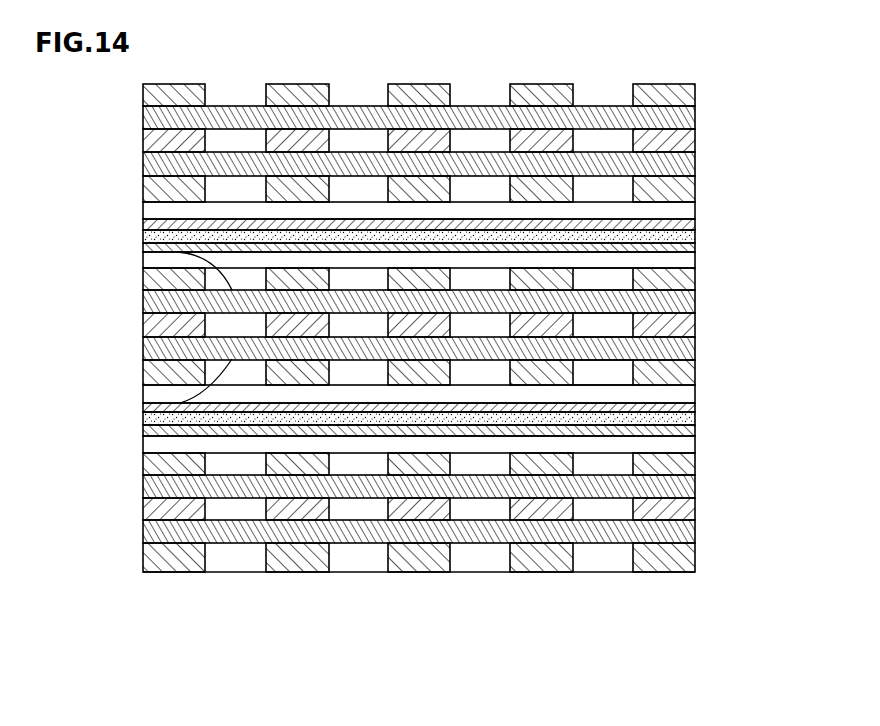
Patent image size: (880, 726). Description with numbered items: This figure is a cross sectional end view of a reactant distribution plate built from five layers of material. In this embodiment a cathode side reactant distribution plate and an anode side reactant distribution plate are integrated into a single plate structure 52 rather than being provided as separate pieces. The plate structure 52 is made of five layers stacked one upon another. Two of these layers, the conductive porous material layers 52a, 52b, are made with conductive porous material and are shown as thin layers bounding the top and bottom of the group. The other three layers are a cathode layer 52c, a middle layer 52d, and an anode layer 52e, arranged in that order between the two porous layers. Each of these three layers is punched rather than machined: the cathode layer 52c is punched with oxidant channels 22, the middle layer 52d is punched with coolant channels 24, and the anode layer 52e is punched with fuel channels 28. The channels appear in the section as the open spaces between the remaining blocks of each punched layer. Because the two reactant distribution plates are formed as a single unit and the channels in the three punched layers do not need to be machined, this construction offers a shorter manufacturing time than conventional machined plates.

The single plate structure 52 is at (81, 267).
The conductive porous material layer 52a is at (148, 245).
The conductive porous material layer 52b is at (146, 411).
The cathode layer 52c is at (146, 276).
The middle layer 52d is at (146, 322).
The anode layer 52e is at (146, 369).
The oxidant channels 22 is at (617, 277).
The coolant channels 24 is at (617, 320).
The fuel channels 28 is at (617, 369).